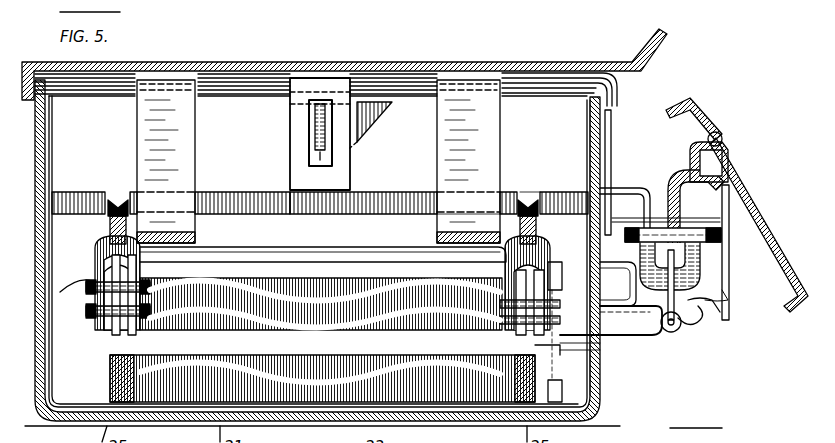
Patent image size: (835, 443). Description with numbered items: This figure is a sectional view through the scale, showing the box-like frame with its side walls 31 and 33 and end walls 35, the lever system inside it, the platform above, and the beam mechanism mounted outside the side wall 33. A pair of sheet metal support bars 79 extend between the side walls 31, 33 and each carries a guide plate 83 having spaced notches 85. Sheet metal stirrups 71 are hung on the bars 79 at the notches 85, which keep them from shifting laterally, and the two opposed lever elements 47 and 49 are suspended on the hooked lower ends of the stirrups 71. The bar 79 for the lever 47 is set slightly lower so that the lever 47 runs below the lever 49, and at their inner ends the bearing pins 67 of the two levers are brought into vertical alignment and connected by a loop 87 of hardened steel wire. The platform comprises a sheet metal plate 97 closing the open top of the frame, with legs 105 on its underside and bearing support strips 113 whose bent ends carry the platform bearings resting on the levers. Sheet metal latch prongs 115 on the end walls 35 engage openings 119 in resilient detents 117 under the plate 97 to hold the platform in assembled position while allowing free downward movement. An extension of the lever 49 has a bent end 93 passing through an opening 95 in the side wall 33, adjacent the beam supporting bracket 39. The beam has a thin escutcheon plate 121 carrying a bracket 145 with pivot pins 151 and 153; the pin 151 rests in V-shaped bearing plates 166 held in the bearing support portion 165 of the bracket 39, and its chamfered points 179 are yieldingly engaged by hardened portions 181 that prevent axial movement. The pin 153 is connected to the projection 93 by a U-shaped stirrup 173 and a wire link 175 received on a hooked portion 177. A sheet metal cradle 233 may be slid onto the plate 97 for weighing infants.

The side wall 31 is at (52, 118).
The side wall 33 is at (590, 125).
The end walls 35 is at (234, 98).
The beam supporting bracket 39 is at (728, 306).
The lever element 47 is at (100, 386).
The lever element 49 is at (205, 335).
The bearing pin 67 is at (618, 408).
The stirrup 71 is at (553, 232).
The support bar 79 is at (222, 218).
The guide plate 83 is at (440, 206).
The notch 85 is at (528, 200).
The loop 87 is at (545, 346).
The bent end 93 is at (645, 336).
The opening 95 is at (600, 350).
The sheet metal plate 97 is at (528, 92).
The leg 105 is at (140, 150).
The bearing support strip 113 is at (324, 245).
The latch prong 115 is at (318, 131).
The detent 117 is at (340, 176).
The opening 119 is at (318, 155).
The escutcheon plate 121 is at (696, 106).
The bracket 145 is at (708, 144).
The pivot pin 151 is at (668, 190).
The pivot pin 153 is at (712, 225).
The bearing support portion 165 is at (732, 140).
The V-shaped bearing plate 166 is at (732, 192).
The stirrup 173 is at (718, 320).
The link 175 is at (675, 332).
The hooked portion 177 is at (695, 330).
The point 179 is at (625, 207).
The hardened portion 181 is at (612, 140).
The cradle 233 is at (420, 64).